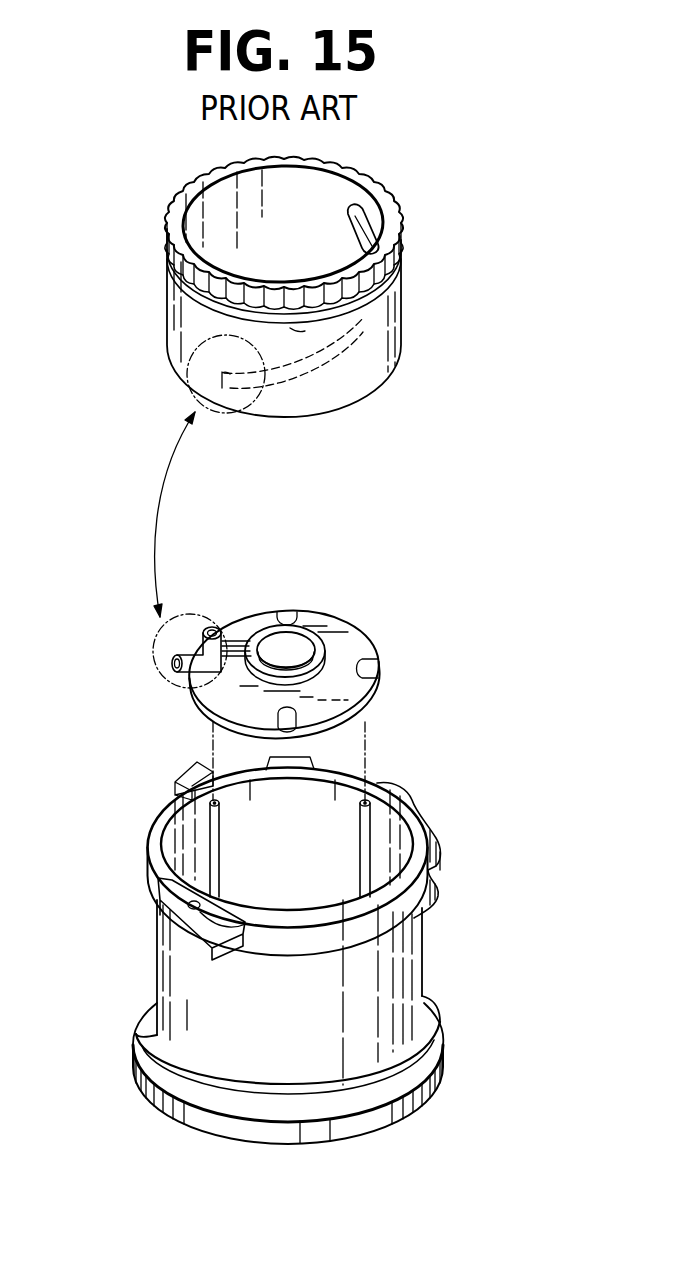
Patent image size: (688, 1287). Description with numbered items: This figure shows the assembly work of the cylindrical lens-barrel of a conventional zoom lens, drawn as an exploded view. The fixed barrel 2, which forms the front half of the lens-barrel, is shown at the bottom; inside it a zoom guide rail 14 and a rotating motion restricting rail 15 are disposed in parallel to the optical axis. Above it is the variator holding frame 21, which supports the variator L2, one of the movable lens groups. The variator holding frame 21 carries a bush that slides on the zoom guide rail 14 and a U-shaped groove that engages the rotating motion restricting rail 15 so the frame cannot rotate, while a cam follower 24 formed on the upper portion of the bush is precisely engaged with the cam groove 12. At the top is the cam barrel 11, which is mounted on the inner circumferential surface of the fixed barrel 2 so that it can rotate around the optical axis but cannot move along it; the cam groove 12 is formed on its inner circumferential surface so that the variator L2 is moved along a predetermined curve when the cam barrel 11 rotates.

The fixed barrel 2 is at (403, 973).
The cam barrel 11 is at (403, 306).
The cam groove 12 is at (236, 392).
The zoom guide rail 14 is at (370, 845).
The rotating motion restricting rail 15 is at (215, 828).
The variator holding frame 21 is at (365, 627).
The cam follower 24 is at (170, 668).
The variator L2 is at (290, 657).